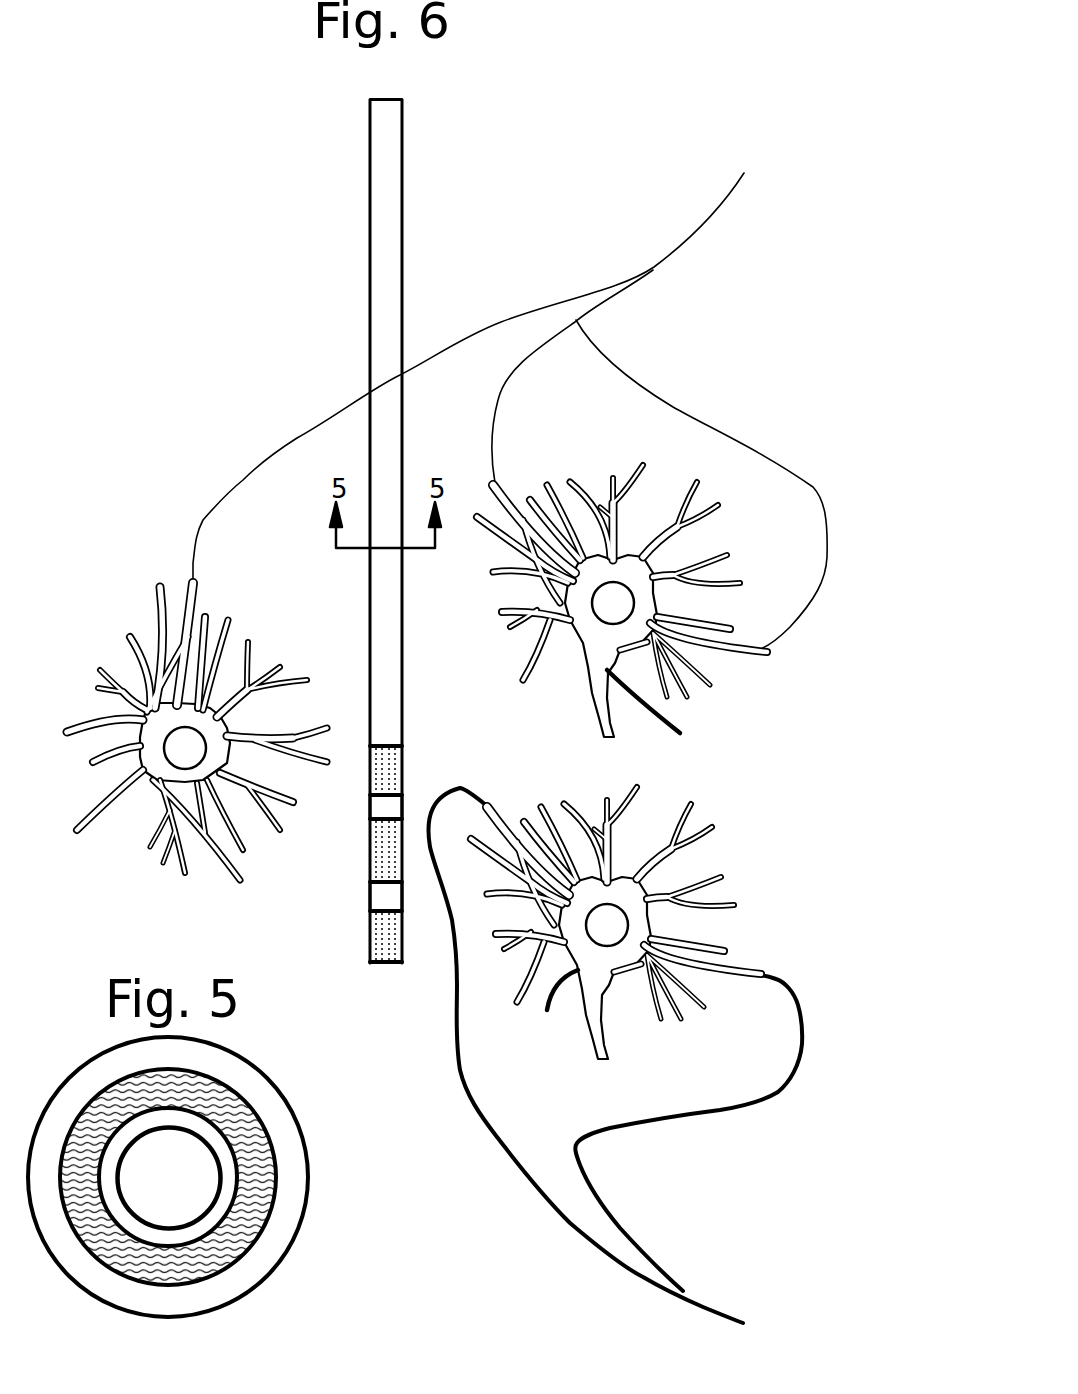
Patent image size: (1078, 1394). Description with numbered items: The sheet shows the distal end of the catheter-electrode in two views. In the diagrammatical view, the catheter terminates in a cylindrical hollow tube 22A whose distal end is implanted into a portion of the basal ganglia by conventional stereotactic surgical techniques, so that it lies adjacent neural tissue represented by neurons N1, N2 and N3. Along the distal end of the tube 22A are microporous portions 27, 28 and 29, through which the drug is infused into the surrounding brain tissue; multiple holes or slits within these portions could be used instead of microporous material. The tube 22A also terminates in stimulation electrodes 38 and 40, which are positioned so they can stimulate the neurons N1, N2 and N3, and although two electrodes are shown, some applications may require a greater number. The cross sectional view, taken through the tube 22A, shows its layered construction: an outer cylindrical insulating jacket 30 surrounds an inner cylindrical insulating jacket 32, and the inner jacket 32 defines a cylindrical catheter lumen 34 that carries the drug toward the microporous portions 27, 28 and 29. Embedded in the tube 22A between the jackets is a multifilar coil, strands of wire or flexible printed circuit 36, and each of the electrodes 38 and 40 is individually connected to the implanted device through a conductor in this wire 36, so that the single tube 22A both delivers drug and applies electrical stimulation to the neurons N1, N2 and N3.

In FIG. 6, the cylindrical hollow tube 22A is at (404, 188).
In FIG. 6, the microporous portion 27 is at (404, 750).
In FIG. 6, the microporous portion 28 is at (366, 837).
In FIG. 6, the microporous portion 29 is at (366, 949).
In FIG. 6, the stimulation electrode 38 is at (404, 800).
In FIG. 6, the stimulation electrode 40 is at (366, 899).
In FIG. 6, the neuron N1 is at (192, 731).
In FIG. 6, the neuron N2 is at (622, 607).
In FIG. 6, the neuron N3 is at (616, 923).
In FIG. 5, the outer cylindrical insulating jacket 30 is at (282, 1093).
In FIG. 5, the inner cylindrical insulating jacket 32 is at (278, 1188).
In FIG. 5, the catheter lumen 34 is at (220, 1162).
In FIG. 5, the multifilar coil, strands of wire or flexible printed circuit 36 is at (268, 1223).